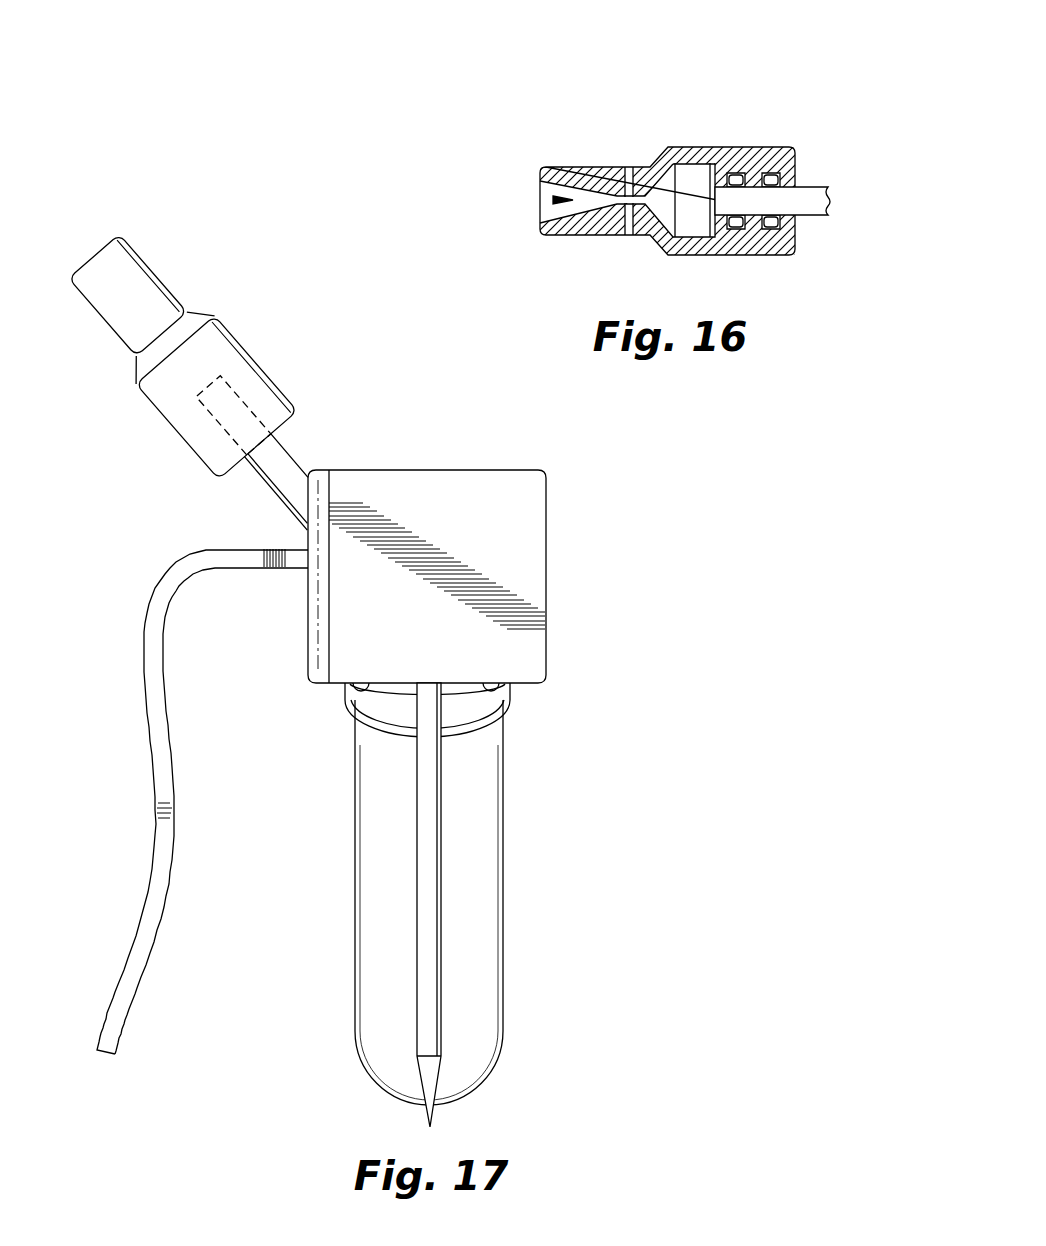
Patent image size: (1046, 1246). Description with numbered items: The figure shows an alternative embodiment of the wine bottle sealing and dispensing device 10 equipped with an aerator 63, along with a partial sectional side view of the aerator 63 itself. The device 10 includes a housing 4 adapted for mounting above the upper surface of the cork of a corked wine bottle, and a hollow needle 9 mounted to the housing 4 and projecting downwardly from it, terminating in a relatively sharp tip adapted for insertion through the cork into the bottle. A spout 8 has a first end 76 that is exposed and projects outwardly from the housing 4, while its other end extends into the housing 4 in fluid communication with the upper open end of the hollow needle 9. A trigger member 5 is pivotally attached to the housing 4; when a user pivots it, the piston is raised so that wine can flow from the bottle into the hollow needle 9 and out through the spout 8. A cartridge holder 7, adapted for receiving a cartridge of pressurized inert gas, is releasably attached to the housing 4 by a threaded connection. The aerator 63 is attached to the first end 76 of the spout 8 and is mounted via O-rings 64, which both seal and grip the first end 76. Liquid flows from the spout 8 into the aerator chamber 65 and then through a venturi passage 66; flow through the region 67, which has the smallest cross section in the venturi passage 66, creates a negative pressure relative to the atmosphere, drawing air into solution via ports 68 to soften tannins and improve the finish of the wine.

In FIG. 17, the housing 4 is at (547, 618).
In FIG. 17, the trigger member 5 is at (146, 881).
In FIG. 17, the cartridge holder 7 is at (508, 876).
In FIG. 16, the spout 8 is at (807, 187).
In FIG. 17, the spout 8 is at (278, 488).
In FIG. 17, the hollow needle 9 is at (443, 1005).
In FIG. 17, the wine bottle sealing and dispensing device 10 is at (622, 527).
In FIG. 16, the aerator 63 is at (778, 110).
In FIG. 17, the aerator 63 is at (110, 310).
In FIG. 16, the O-rings 64 is at (747, 230).
In FIG. 16, the aerator chamber 65 is at (693, 212).
In FIG. 16, the venturi passage 66 is at (553, 200).
In FIG. 16, the region 67 is at (577, 237).
In FIG. 16, the ports 68 is at (630, 167).
In FIG. 17, the first end of spout 76 is at (219, 376).